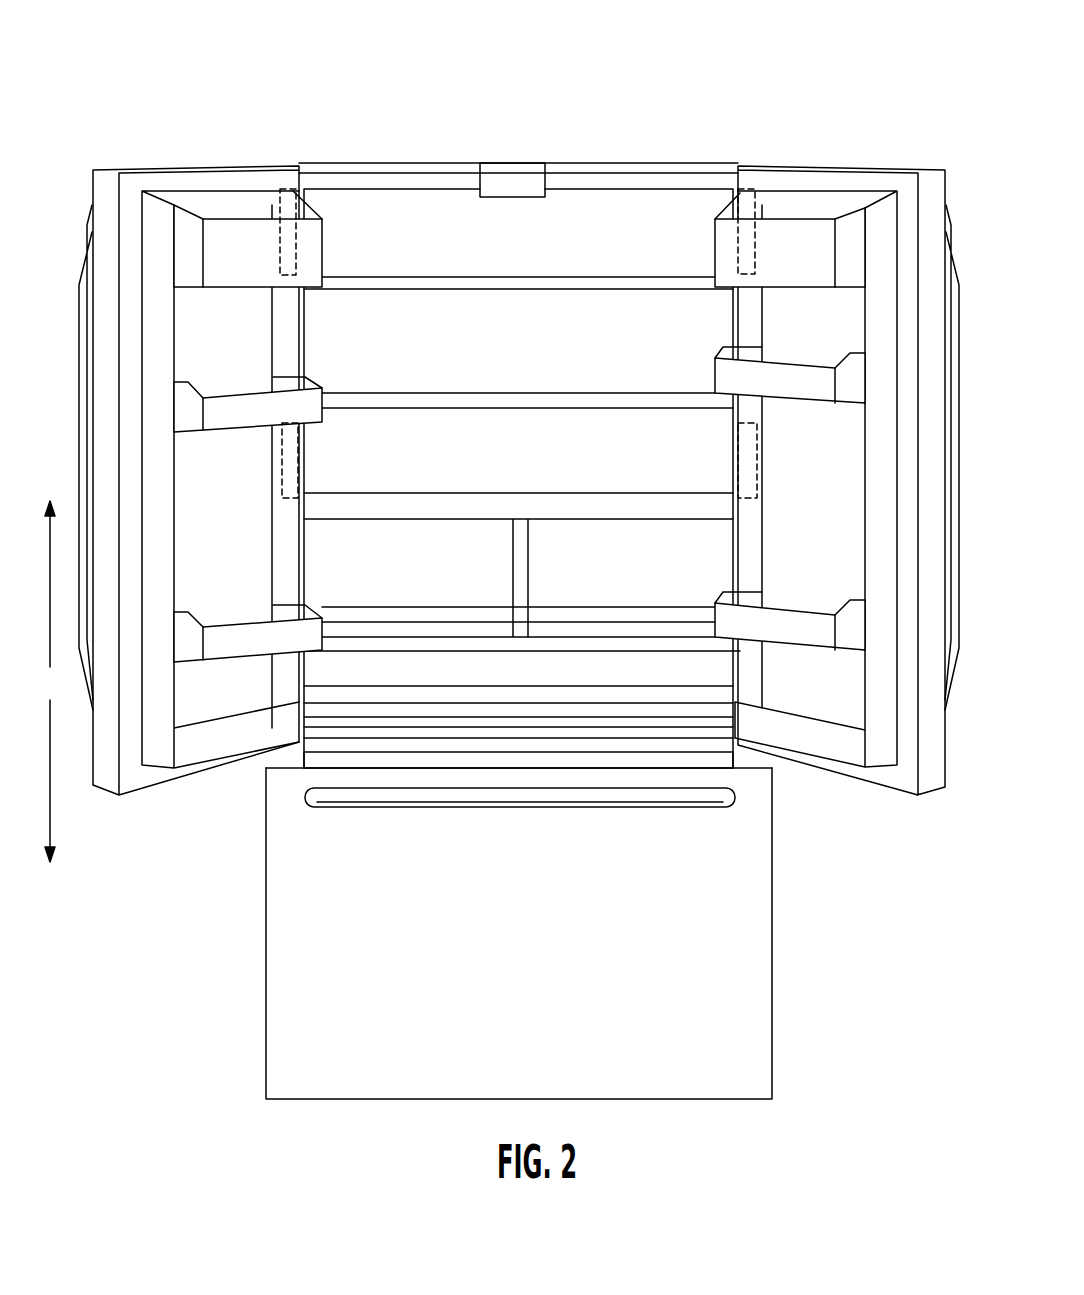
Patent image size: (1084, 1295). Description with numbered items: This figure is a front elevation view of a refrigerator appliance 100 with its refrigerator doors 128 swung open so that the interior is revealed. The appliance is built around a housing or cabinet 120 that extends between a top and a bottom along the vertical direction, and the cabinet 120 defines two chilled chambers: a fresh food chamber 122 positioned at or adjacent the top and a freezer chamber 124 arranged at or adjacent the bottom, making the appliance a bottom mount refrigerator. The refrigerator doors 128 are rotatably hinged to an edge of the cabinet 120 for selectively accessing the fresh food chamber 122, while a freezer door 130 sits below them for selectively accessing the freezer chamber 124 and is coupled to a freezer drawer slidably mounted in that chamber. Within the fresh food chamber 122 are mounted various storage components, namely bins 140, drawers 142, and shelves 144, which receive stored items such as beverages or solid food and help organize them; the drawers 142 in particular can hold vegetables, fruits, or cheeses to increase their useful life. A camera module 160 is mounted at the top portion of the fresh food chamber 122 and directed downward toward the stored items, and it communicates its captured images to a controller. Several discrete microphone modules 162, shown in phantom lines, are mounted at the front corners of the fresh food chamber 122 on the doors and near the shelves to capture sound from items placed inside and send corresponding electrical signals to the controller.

The refrigerator appliance 100 is at (501, 552).
The cabinet 120 is at (775, 765).
The fresh food chamber 122 is at (519, 374).
The freezer chamber 124 is at (499, 933).
The refrigerator doors 128 is at (519, 443).
The freezer door 130 is at (300, 1002).
The bins 140 is at (270, 630).
The drawers 142 is at (553, 628).
The shelves 144 is at (517, 283).
The camera module 160 is at (515, 197).
The microphone modules 162 is at (297, 232).